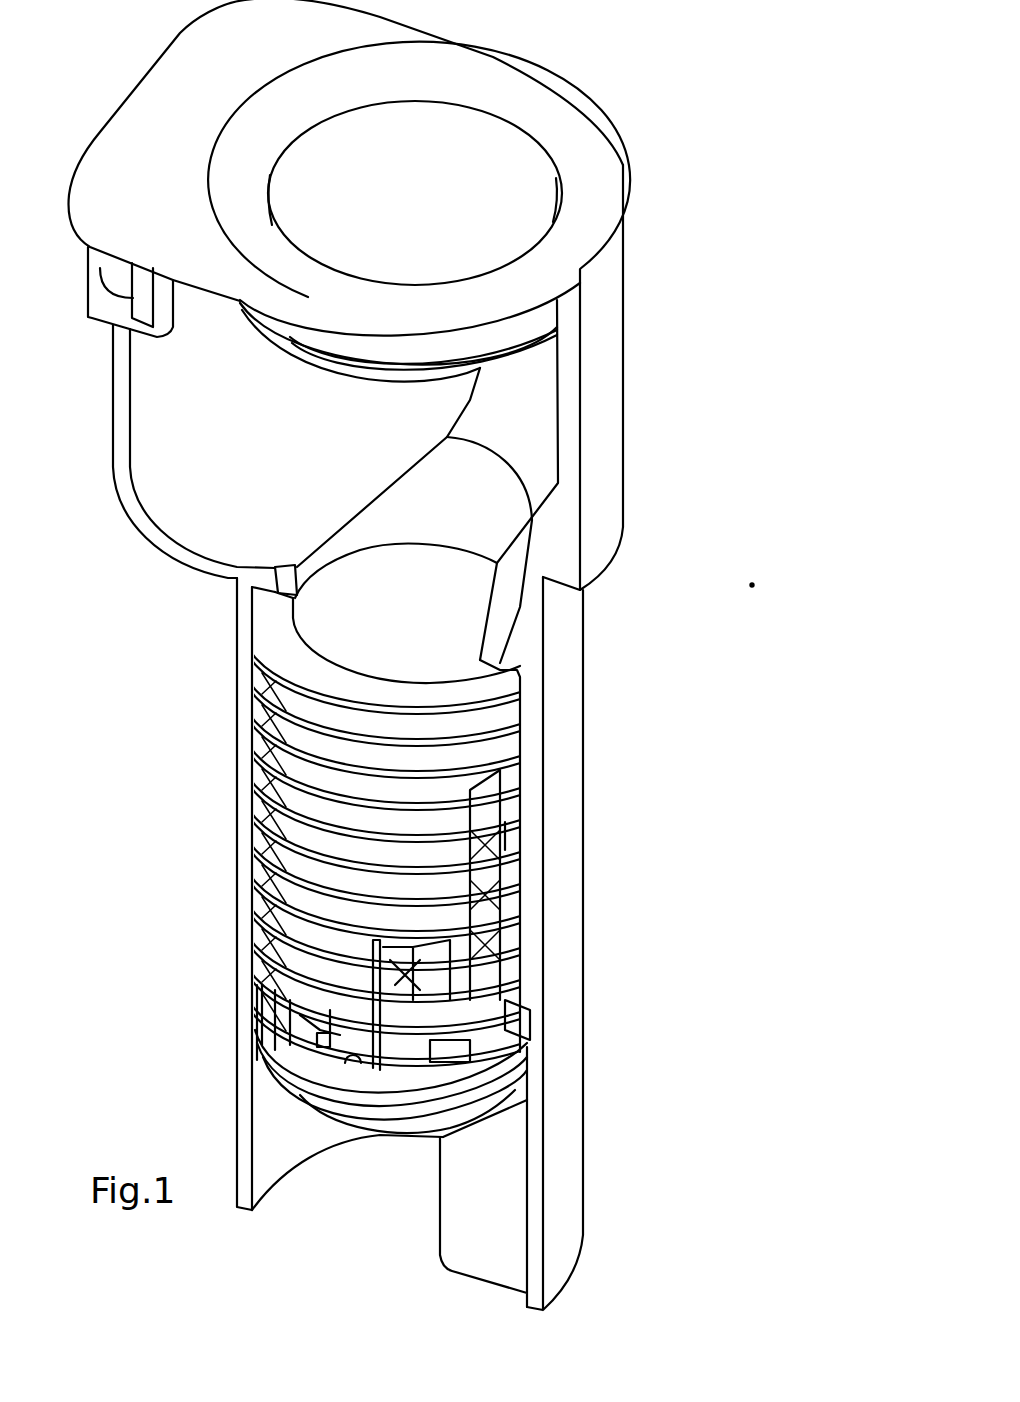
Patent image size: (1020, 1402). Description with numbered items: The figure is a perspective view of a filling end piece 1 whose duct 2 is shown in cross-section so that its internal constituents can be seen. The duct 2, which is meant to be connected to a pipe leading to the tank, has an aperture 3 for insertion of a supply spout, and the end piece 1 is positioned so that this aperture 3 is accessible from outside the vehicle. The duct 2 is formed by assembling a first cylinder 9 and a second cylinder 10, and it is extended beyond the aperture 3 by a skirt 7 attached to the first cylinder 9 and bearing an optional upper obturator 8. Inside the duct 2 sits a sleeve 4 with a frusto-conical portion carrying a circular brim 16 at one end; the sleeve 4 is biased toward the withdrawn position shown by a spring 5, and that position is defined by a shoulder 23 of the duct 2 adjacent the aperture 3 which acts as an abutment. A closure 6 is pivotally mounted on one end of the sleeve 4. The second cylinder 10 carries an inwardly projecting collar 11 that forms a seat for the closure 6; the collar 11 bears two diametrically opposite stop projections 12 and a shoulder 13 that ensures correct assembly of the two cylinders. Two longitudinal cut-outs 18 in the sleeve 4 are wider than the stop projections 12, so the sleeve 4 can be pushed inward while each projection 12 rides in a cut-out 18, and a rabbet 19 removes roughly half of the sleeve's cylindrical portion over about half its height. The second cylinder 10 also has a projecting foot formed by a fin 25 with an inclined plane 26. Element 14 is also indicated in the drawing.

The filling end piece 1 is at (160, 748).
The duct 2 is at (553, 898).
The aperture 3 is at (468, 488).
The sleeve 4 is at (487, 747).
The spring 5 is at (510, 817).
The closure 6 is at (500, 1092).
The skirt 7 is at (604, 330).
The upper obturator 8 is at (490, 143).
The first cylinder 9 is at (563, 622).
The second cylinder 10 is at (570, 1190).
The collar 11 is at (510, 1040).
The stop projections 12 is at (505, 1035).
The shoulder 13 is at (278, 904).
The guide 14 is at (273, 1013).
The circular brim 16 is at (270, 627).
The longitudinal cut-outs 18 is at (507, 868).
The rabbet 19 is at (377, 980).
The shoulder 23 is at (274, 572).
The fin 25 is at (460, 1242).
The inclined plane 26 is at (467, 1130).